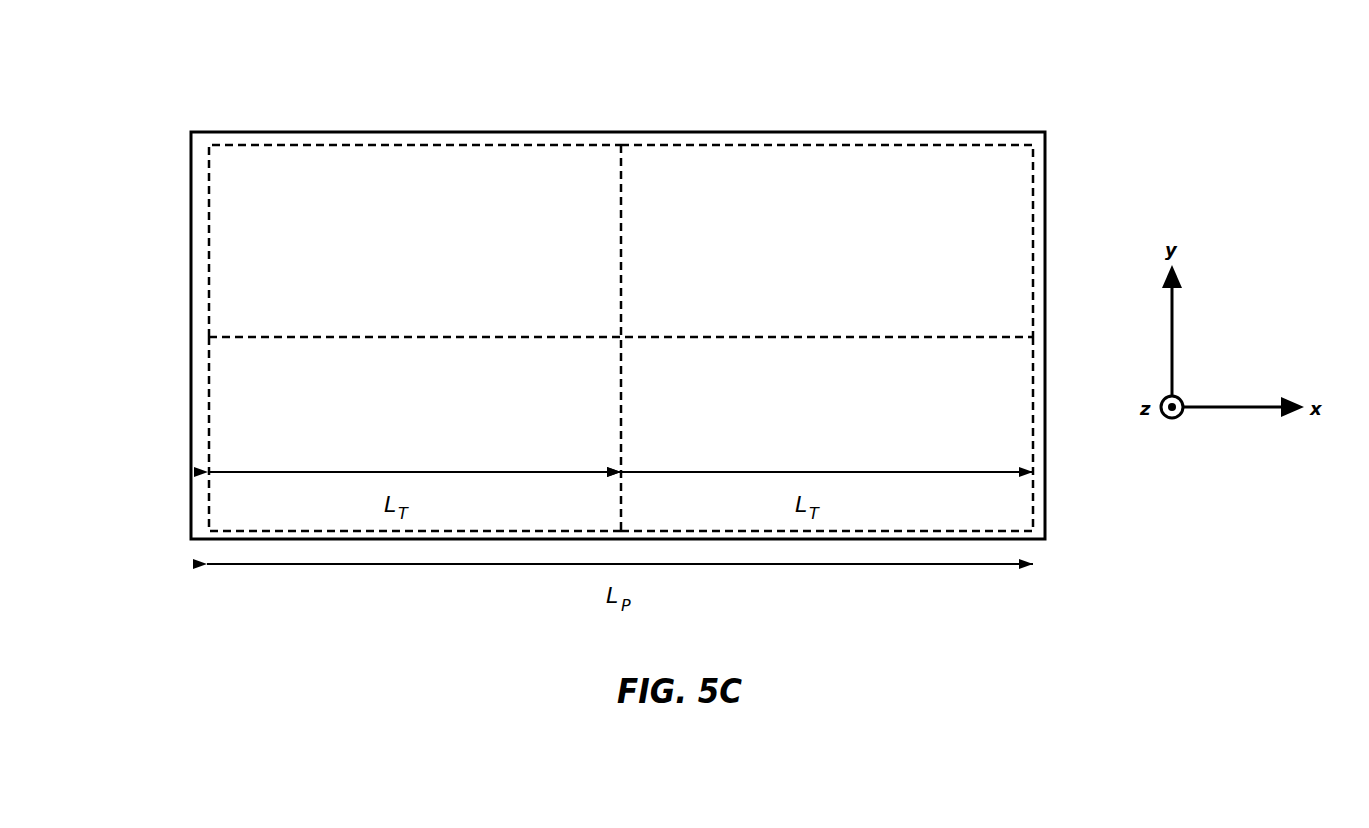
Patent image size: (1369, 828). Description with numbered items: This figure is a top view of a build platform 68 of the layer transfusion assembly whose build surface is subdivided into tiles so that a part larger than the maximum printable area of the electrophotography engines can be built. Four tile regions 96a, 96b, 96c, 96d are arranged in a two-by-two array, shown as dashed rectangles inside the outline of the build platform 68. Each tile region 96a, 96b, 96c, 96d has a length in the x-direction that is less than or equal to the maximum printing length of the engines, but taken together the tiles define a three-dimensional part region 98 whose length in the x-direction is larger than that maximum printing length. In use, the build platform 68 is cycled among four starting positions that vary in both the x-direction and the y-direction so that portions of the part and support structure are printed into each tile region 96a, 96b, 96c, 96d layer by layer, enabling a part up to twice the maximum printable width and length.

The build platform 68 is at (618, 132).
The 3D part region 98 is at (138, 145).
The first tile region 96a is at (208, 437).
The second tile region 96b is at (208, 242).
The third tile region 96c is at (1033, 433).
The fourth tile region 96d is at (1033, 240).